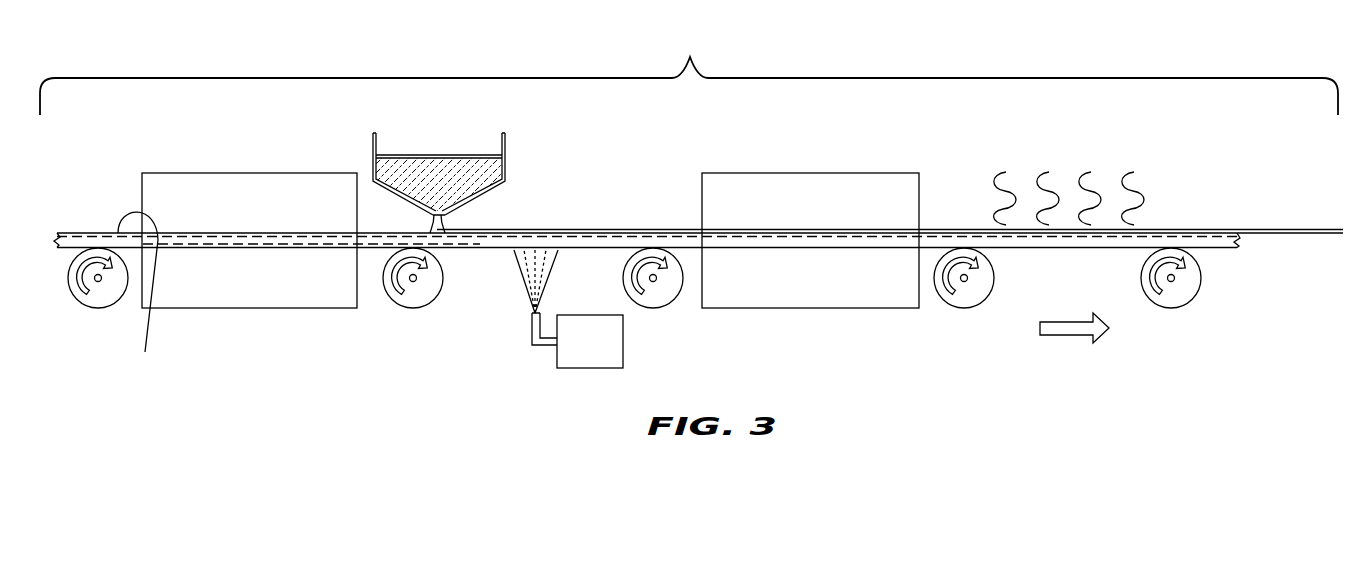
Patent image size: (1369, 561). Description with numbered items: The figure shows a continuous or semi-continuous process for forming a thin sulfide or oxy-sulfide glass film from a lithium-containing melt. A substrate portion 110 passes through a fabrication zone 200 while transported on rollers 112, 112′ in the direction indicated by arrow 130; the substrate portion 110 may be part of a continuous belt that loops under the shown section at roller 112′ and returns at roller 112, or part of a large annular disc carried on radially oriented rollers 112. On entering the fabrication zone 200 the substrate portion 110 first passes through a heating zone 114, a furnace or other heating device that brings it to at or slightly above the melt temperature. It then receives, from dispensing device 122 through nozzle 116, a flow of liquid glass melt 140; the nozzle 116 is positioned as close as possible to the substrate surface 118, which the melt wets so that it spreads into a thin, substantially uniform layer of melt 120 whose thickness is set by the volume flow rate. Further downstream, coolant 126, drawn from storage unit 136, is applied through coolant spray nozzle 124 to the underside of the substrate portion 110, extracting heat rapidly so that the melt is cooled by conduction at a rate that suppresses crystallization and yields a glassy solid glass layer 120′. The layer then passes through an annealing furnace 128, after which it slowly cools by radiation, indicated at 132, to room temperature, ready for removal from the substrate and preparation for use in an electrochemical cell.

The fabrication zone 200 is at (690, 57).
The substrate portion 110 is at (80, 233).
The rollers 112 is at (99, 308).
The roller 112′ is at (1195, 298).
The heating zone 114 is at (283, 308).
The substrate surface 118 is at (141, 299).
The dispensing device 122 is at (506, 142).
The liquid glass melt 140 is at (430, 155).
The nozzle 116 is at (440, 213).
The layer of melt 120 is at (483, 230).
The solid glass layer 120′ is at (598, 230).
The annealing furnace 128 is at (893, 173).
The radiation 132 is at (1090, 183).
The arrow 130 is at (1092, 313).
The coolant 126 is at (520, 274).
The coolant spray nozzle 124 is at (531, 320).
The storage unit 136 is at (623, 338).